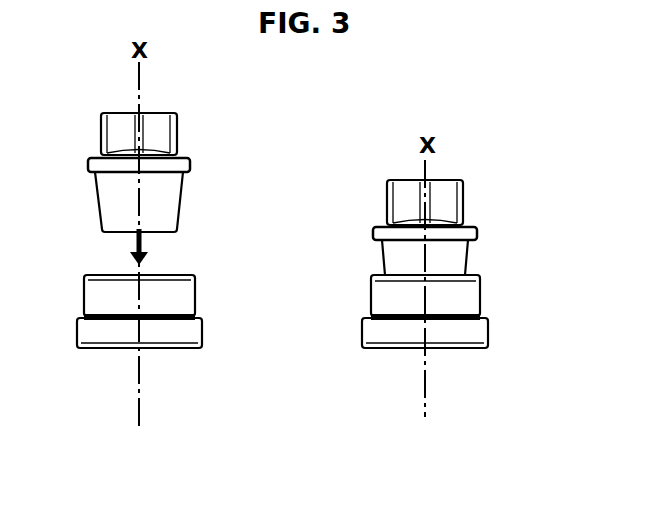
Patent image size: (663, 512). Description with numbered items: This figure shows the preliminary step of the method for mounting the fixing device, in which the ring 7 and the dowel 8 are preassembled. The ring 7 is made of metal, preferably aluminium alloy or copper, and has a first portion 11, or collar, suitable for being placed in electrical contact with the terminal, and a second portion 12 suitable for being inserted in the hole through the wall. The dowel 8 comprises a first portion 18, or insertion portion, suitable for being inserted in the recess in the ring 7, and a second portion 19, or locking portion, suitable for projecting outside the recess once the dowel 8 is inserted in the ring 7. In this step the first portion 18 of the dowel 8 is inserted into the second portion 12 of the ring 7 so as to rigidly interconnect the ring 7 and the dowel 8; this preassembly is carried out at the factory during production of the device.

The ring 7 is at (191, 303).
The dowel 8 is at (192, 205).
The first portion 11 is at (83, 336).
The second portion 12 is at (100, 298).
The first portion 18 is at (115, 199).
The second portion 19 is at (110, 142).